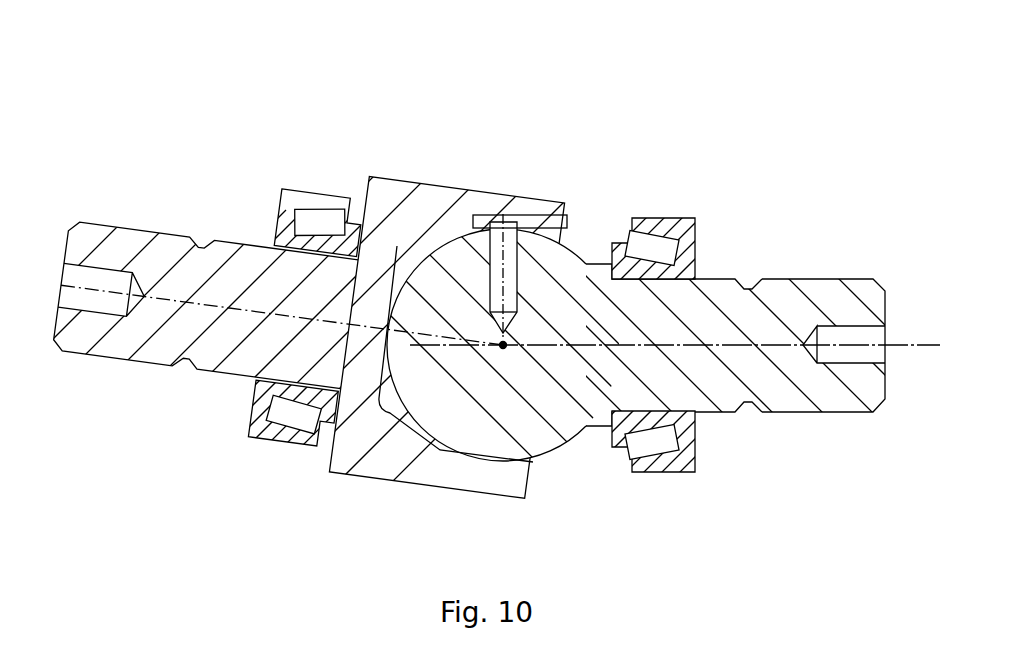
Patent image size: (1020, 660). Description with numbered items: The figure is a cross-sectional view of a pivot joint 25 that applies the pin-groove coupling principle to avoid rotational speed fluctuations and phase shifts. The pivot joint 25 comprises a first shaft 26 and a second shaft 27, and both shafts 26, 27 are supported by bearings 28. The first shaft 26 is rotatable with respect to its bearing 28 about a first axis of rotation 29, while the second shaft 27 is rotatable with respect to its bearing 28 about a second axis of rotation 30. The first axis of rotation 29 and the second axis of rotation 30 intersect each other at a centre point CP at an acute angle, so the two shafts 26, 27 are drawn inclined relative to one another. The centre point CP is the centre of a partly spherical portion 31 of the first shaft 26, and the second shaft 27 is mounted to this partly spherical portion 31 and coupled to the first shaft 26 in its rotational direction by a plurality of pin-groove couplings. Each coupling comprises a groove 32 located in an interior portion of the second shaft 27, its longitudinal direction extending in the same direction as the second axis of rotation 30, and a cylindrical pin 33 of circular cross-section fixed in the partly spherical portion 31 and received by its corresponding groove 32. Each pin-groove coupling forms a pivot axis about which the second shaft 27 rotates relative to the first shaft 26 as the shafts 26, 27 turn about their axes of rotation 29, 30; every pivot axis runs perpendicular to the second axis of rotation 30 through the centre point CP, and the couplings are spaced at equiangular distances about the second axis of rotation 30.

The pivot joint 25 is at (532, 163).
The first shaft 26 is at (847, 303).
The second shaft 27 is at (185, 252).
The bearings 28 is at (300, 192).
The first axis of rotation 29 is at (775, 345).
The second axis of rotation 30 is at (93, 288).
The partly spherical portion 31 is at (585, 255).
The groove 32 is at (530, 224).
The pin 33 is at (493, 238).
The centre point CP is at (503, 345).